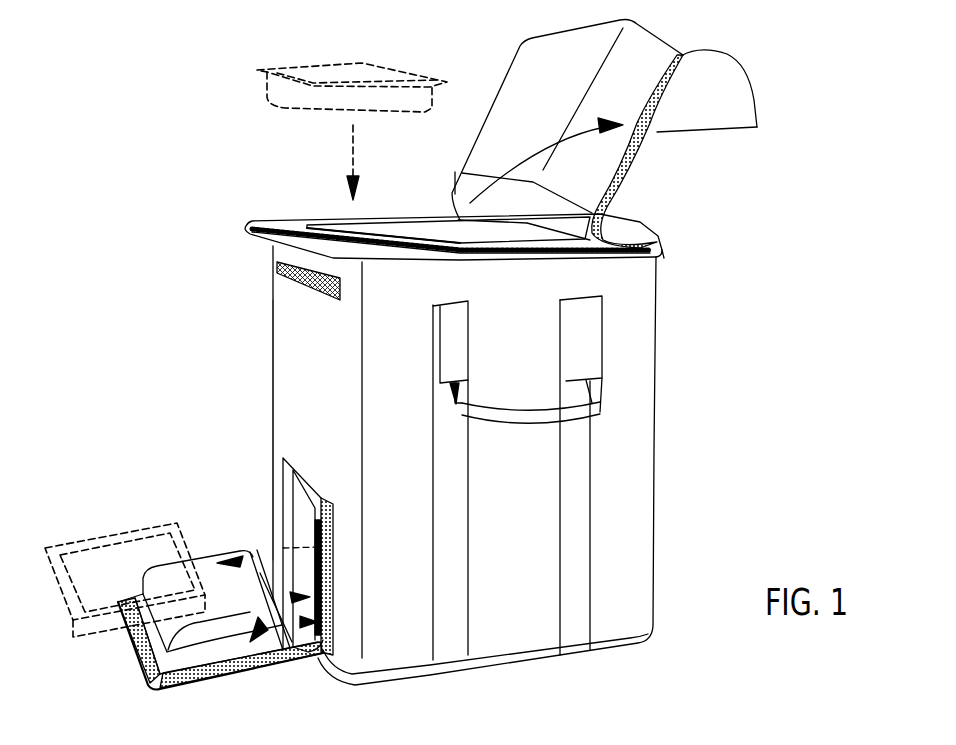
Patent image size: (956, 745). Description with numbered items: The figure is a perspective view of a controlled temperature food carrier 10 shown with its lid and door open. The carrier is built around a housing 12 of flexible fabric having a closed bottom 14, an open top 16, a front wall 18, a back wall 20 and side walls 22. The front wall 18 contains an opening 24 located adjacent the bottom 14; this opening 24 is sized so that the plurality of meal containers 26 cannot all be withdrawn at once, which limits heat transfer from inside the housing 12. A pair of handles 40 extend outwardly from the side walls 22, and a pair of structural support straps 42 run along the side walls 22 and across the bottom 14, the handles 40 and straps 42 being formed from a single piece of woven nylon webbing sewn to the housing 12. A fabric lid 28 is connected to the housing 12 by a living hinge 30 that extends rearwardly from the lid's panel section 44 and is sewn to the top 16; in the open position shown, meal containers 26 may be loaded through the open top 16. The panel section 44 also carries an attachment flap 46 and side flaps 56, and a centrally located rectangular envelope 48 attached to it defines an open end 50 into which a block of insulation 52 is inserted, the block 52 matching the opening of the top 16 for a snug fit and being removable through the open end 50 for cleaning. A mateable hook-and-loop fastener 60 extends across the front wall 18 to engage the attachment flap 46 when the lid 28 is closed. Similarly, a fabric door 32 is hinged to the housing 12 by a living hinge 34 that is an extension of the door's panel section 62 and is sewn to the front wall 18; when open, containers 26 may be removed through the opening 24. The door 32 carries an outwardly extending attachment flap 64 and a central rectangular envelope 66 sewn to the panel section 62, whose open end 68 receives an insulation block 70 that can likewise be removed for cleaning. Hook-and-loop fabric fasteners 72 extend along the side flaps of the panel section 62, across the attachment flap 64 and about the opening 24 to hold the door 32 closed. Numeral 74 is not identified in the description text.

The controlled temperature food carrier 10 is at (148, 82).
The housing 12 is at (680, 360).
The closed bottom 14 is at (530, 657).
The open top 16 is at (367, 232).
The front wall 18 is at (295, 353).
The back wall 20 is at (660, 394).
The side walls 22 is at (630, 518).
The opening 24 is at (285, 508).
The meal containers 26 is at (308, 67).
The lid 28 is at (685, 32).
The living hinge 30 is at (606, 235).
The door 32 is at (232, 705).
The living hinge 34 is at (310, 633).
The handles 40 is at (530, 425).
The structural support straps 42 is at (577, 593).
The panel section 44 is at (657, 133).
The attachment flap 46 is at (757, 88).
The envelope 48 is at (523, 70).
The open end 50 is at (447, 211).
The block of insulation 52 is at (478, 213).
The side flaps 56 is at (700, 52).
The hook-and-loop type fabric fastener 60 is at (275, 270).
The panel section 62 is at (247, 677).
The attachment flap 64 is at (137, 667).
The envelope 66 is at (192, 648).
The open end 68 is at (300, 625).
The insulation block 70 is at (262, 570).
The hook-and-loop type fabric fasteners 72 is at (287, 470).
The door bottom fastener strip 74 is at (273, 667).